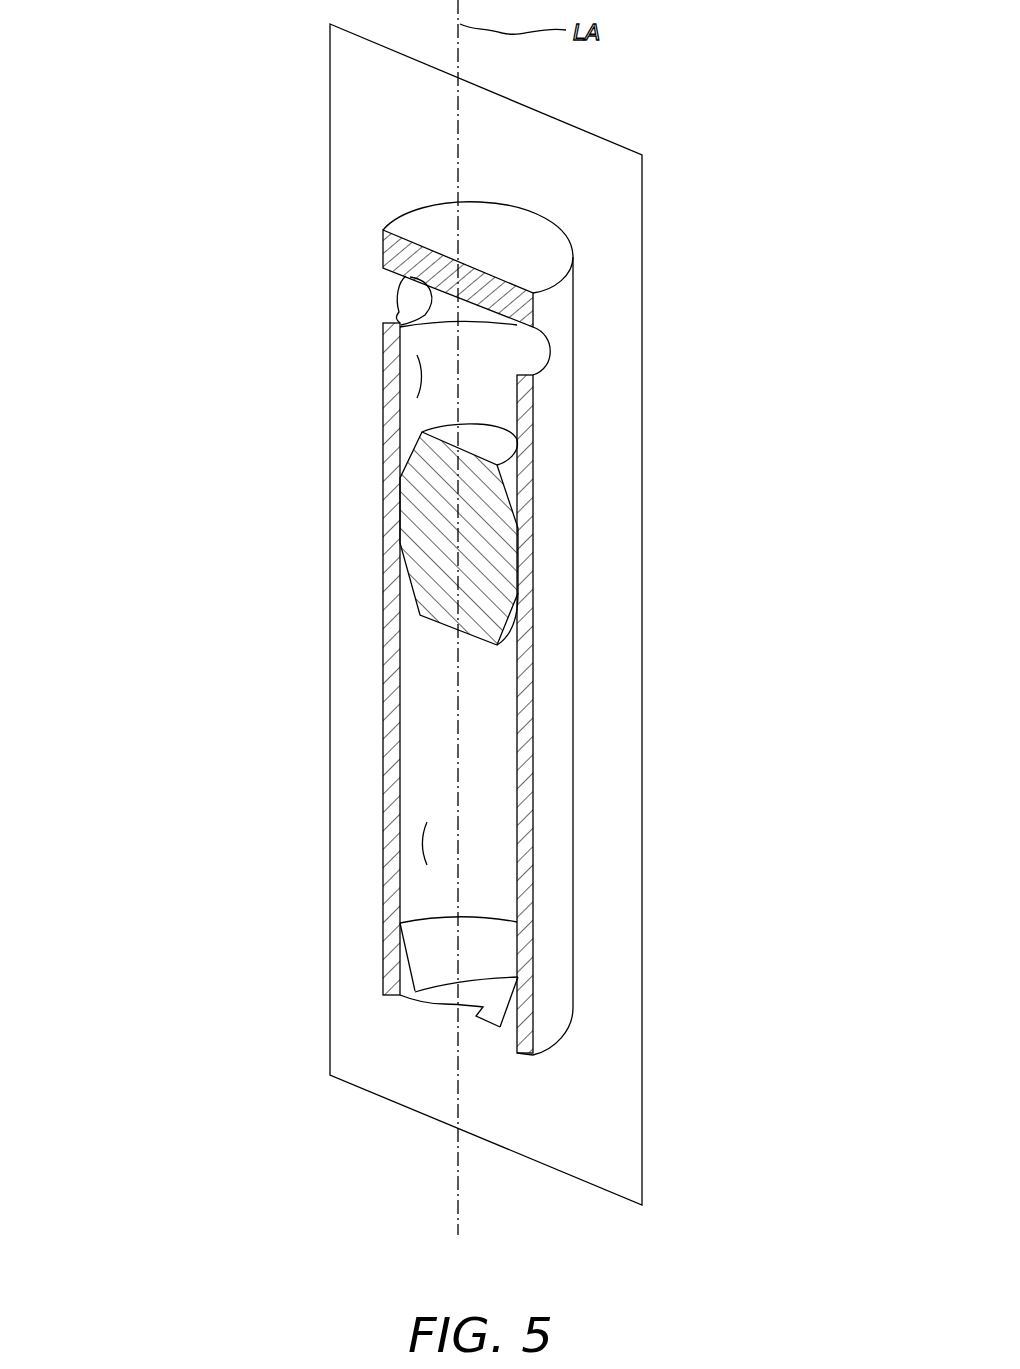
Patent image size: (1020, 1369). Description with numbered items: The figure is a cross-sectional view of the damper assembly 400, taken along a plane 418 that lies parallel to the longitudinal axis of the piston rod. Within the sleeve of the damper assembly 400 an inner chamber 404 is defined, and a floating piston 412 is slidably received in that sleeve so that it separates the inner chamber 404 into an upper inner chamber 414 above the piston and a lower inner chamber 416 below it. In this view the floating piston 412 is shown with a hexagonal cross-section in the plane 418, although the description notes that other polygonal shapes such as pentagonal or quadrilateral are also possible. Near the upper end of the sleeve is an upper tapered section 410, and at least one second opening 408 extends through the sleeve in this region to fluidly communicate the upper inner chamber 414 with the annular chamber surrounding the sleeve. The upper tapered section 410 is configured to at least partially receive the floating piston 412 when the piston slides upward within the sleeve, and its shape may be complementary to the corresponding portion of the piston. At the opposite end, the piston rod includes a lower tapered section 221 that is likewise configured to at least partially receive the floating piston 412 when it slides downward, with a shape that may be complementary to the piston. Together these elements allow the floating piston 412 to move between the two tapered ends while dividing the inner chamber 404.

The damper assembly 400 is at (257, 89).
The plane 418 is at (357, 163).
The second opening 408 is at (413, 292).
The upper tapered section 410 is at (403, 313).
The upper inner chamber 414 is at (400, 385).
The floating piston 412 is at (427, 545).
The inner chamber 404 is at (420, 710).
The lower inner chamber 416 is at (420, 850).
The lower tapered section 221 is at (503, 1022).